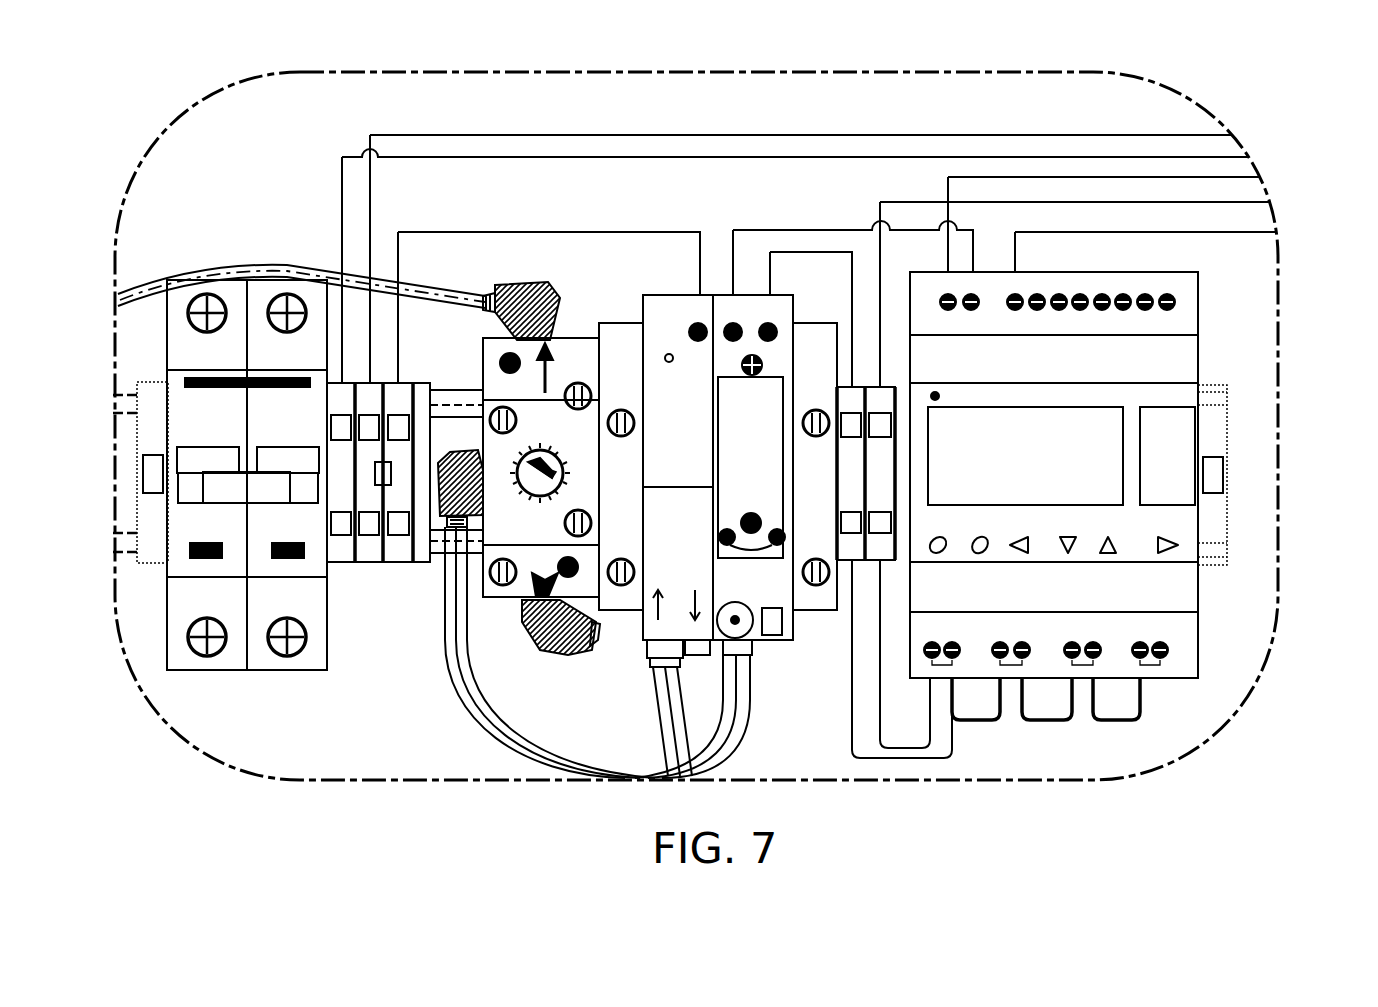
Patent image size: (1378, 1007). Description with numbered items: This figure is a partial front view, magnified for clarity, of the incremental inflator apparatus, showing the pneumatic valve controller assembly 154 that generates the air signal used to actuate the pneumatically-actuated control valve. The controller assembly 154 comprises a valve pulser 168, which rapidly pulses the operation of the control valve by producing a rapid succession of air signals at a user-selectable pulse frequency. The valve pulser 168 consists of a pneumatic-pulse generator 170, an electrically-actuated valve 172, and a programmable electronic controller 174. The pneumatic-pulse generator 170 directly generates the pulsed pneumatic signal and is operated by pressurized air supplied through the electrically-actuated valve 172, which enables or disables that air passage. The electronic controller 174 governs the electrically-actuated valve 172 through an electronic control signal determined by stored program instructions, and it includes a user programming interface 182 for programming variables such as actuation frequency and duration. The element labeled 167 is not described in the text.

The pneumatic valve controller assembly 154 is at (735, 421).
The power cable 167 is at (185, 250).
The valve pulser 168 is at (262, 110).
The pneumatic-pulse generator 170 is at (578, 340).
The electrically-actuated valve 172 is at (716, 255).
The programmable electronic controller 174 is at (1139, 475).
The user programming interface 182 is at (1045, 464).